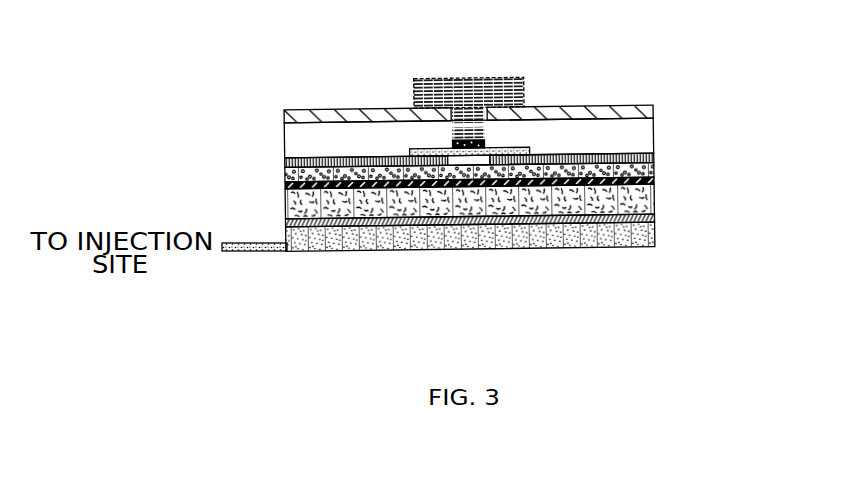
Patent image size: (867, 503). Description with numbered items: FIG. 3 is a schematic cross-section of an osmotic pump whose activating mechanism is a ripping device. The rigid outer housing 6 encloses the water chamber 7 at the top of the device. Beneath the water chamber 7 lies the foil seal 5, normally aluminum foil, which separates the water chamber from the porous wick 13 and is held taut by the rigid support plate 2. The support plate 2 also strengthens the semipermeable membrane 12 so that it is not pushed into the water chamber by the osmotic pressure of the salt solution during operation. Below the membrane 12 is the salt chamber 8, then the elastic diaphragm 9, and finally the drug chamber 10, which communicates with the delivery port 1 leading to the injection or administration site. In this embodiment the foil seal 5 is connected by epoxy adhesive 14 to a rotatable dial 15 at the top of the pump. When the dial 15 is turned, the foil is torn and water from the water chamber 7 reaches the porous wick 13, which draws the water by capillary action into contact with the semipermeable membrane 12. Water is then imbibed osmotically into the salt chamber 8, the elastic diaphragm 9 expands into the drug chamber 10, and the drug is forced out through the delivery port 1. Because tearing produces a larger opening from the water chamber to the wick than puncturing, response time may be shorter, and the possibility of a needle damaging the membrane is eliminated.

The delivery port 1 is at (265, 252).
The rigid support plate 2 is at (657, 157).
The foil seal 5 is at (418, 148).
The outer housing 6 is at (535, 104).
The water chamber 7 is at (333, 146).
The salt chamber 8 is at (285, 203).
The elastic diaphragm 9 is at (657, 220).
The drug chamber 10 is at (462, 248).
The semipermeable membrane 12 is at (658, 182).
The porous wick 13 is at (285, 175).
The epoxy adhesive 14 is at (488, 141).
The rotatable dial 15 is at (471, 78).